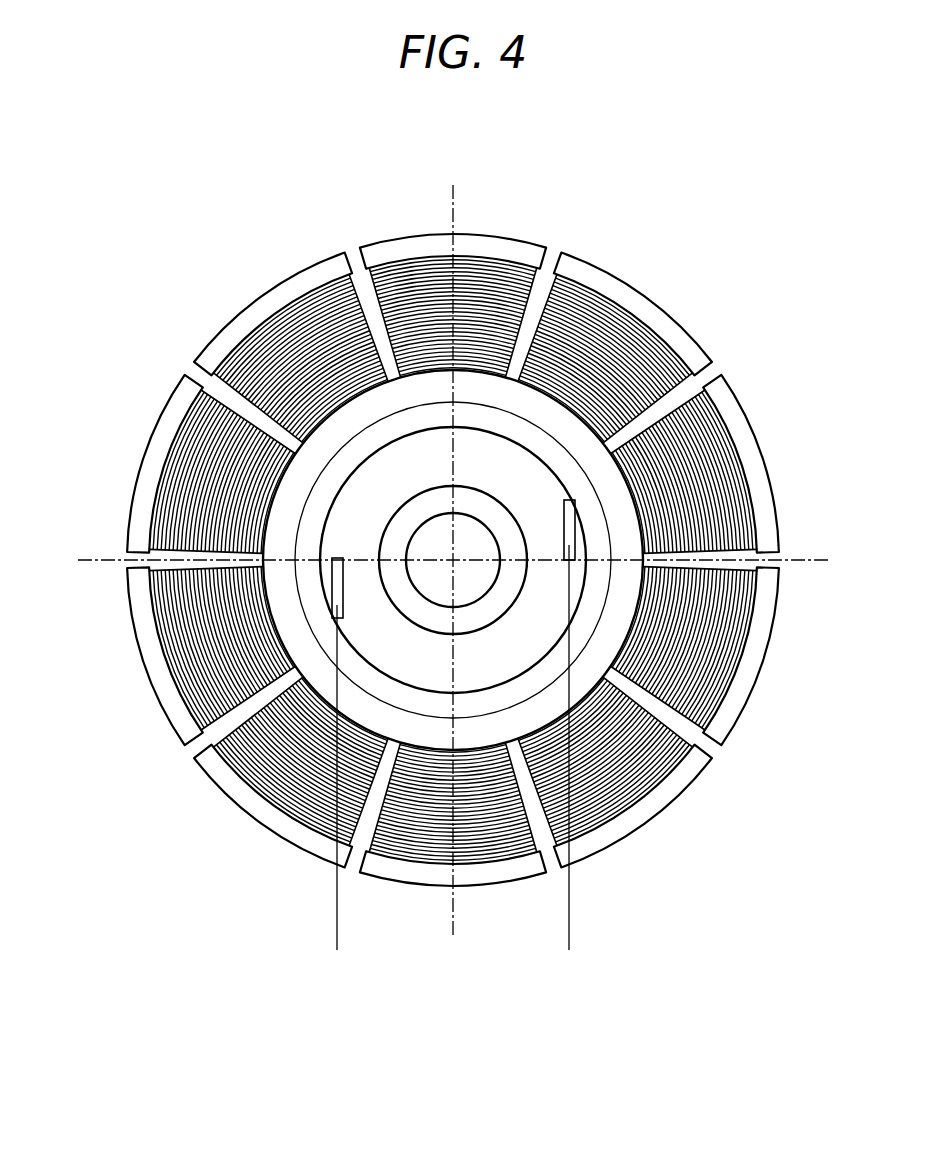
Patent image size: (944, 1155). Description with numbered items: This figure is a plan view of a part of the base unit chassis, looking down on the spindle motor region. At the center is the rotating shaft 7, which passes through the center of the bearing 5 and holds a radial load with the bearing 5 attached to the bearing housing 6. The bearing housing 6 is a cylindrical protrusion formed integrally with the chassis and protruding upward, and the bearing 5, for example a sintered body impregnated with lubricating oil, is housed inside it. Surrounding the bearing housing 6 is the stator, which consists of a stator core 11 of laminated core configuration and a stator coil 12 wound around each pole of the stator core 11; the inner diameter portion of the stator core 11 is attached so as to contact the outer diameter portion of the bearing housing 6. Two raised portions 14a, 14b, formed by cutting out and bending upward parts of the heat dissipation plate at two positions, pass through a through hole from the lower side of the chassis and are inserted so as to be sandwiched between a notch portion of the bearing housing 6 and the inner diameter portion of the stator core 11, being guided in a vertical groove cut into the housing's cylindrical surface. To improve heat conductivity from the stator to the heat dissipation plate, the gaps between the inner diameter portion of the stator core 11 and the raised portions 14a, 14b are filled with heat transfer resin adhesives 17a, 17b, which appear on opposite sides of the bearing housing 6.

The bearing 5 is at (447, 502).
The bearing housing 6 is at (503, 492).
The rotating shaft 7 is at (340, 477).
The stator core 11 is at (198, 402).
The stator coil 12 is at (215, 480).
The raised portion 14a is at (338, 792).
The raised portion 14b is at (571, 762).
The heat transfer resin adhesive 17a is at (330, 568).
The heat transfer resin adhesive 17b is at (577, 548).